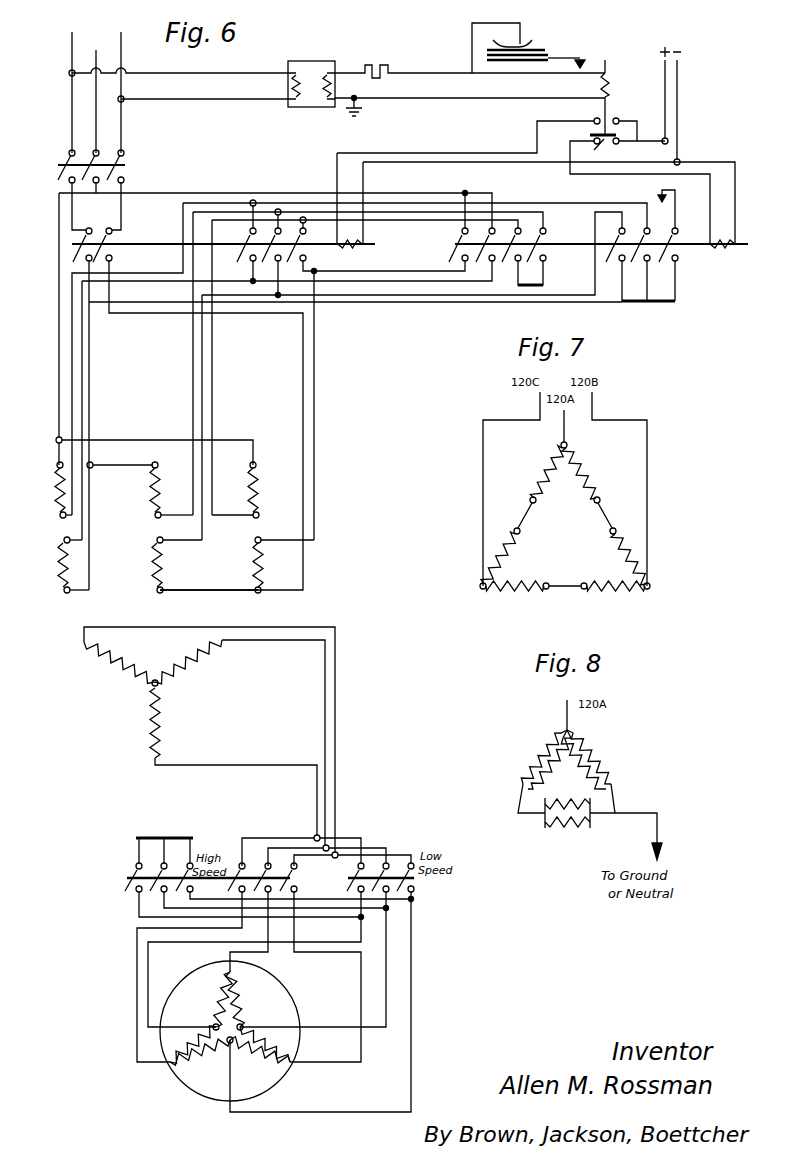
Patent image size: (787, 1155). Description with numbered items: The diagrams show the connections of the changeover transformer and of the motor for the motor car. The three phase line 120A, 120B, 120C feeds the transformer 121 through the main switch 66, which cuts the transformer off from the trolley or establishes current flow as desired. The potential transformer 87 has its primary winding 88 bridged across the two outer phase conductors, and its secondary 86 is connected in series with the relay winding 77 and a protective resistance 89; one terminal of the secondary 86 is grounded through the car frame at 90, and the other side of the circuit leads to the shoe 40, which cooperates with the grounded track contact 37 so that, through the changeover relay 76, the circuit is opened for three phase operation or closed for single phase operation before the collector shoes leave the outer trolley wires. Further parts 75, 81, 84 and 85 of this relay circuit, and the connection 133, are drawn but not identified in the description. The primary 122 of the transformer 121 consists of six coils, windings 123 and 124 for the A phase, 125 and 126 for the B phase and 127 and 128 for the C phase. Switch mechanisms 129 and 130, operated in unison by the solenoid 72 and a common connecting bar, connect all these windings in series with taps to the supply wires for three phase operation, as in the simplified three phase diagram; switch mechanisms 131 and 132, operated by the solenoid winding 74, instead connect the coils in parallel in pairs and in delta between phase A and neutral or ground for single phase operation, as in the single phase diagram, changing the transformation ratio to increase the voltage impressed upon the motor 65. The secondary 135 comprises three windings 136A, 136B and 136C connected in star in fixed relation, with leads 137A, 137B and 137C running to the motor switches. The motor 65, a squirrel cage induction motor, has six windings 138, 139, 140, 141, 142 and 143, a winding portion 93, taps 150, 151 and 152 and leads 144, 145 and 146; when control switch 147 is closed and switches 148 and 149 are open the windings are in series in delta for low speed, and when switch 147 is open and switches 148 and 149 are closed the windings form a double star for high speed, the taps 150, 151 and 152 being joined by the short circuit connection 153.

In FIG. 6, the track contact 37 is at (540, 55).
In FIG. 6, the shoe 40 is at (525, 42).
In FIG. 6, the motor 65 is at (231, 1026).
In FIG. 6, the main switch 66 is at (125, 166).
In FIG. 6, the solenoid 72 is at (366, 252).
In FIG. 6, the solenoid winding 74 is at (725, 250).
In FIG. 6, the contact bar 75 is at (588, 134).
In FIG. 6, the changeover relay 76 is at (607, 64).
In FIG. 6, the relay winding 77 is at (610, 83).
In FIG. 6, the battery 81 is at (679, 100).
In FIG. 6, the switch 84 is at (640, 191).
In FIG. 6, the contacts 85 is at (592, 118).
In FIG. 6, the secondary 86 is at (339, 88).
In FIG. 6, the potential transformer 87 is at (308, 61).
In FIG. 6, the primary winding 88 is at (285, 88).
In FIG. 6, the protective resistance 89 is at (386, 63).
In FIG. 6, the ground 90 is at (364, 113).
In FIG. 6, the motor winding 93 is at (205, 980).
In FIG. 6, the three phase line 120A is at (92, 91).
In FIG. 6, the three phase line 120B is at (61, 81).
In FIG. 6, the three phase line 120C is at (117, 81).
In FIG. 6, the transformer 121 is at (327, 603).
In FIG. 6, the primary 122 is at (204, 520).
In FIG. 7, the primary 122 is at (580, 506).
In FIG. 8, the primary 122 is at (599, 780).
In FIG. 6, the coil 123 is at (48, 490).
In FIG. 7, the coil 123 is at (590, 473).
In FIG. 8, the coil 123 is at (597, 757).
In FIG. 6, the coil 124 is at (56, 565).
In FIG. 7, the coil 124 is at (616, 559).
In FIG. 8, the coil 124 is at (594, 759).
In FIG. 6, the coil 125 is at (152, 490).
In FIG. 7, the coil 125 is at (617, 598).
In FIG. 8, the coil 125 is at (559, 830).
In FIG. 6, the coil 126 is at (157, 565).
In FIG. 7, the coil 126 is at (516, 598).
In FIG. 8, the coil 126 is at (571, 839).
In FIG. 6, the coil 127 is at (235, 490).
In FIG. 7, the coil 127 is at (536, 472).
In FIG. 8, the coil 127 is at (532, 757).
In FIG. 6, the coil 128 is at (265, 565).
In FIG. 7, the coil 128 is at (512, 558).
In FIG. 8, the coil 128 is at (534, 759).
In FIG. 6, the switch mechanism 129 is at (72, 244).
In FIG. 6, the switch mechanism 130 is at (306, 259).
In FIG. 6, the switch mechanism 131 is at (455, 246).
In FIG. 6, the switch mechanism 132 is at (677, 259).
In FIG. 6, the ground connection 133 is at (676, 204).
In FIG. 6, the secondary 135 is at (180, 739).
In FIG. 6, the secondary winding 136A is at (240, 742).
In FIG. 6, the secondary winding 136B is at (234, 690).
In FIG. 6, the secondary winding 136C is at (90, 663).
In FIG. 6, the lead 137A is at (333, 824).
In FIG. 6, the lead 137B is at (313, 824).
In FIG. 6, the lead 137C is at (338, 804).
In FIG. 6, the motor winding 138 is at (221, 1005).
In FIG. 6, the motor winding 139 is at (252, 1005).
In FIG. 6, the motor winding 140 is at (200, 1038).
In FIG. 6, the motor winding 141 is at (205, 1062).
In FIG. 6, the motor winding 142 is at (246, 1061).
In FIG. 6, the motor winding 143 is at (270, 1038).
In FIG. 6, the lead 144 is at (256, 972).
In FIG. 6, the lead 145 is at (168, 1064).
In FIG. 6, the lead 146 is at (292, 1064).
In FIG. 6, the control switch 147 is at (413, 884).
In FIG. 6, the control switch 148 is at (123, 882).
In FIG. 6, the control switch 149 is at (227, 888).
In FIG. 6, the tap 150 is at (148, 1028).
In FIG. 6, the tap 151 is at (386, 1027).
In FIG. 6, the tap 152 is at (233, 1114).
In FIG. 6, the short circuit connection 153 is at (165, 837).